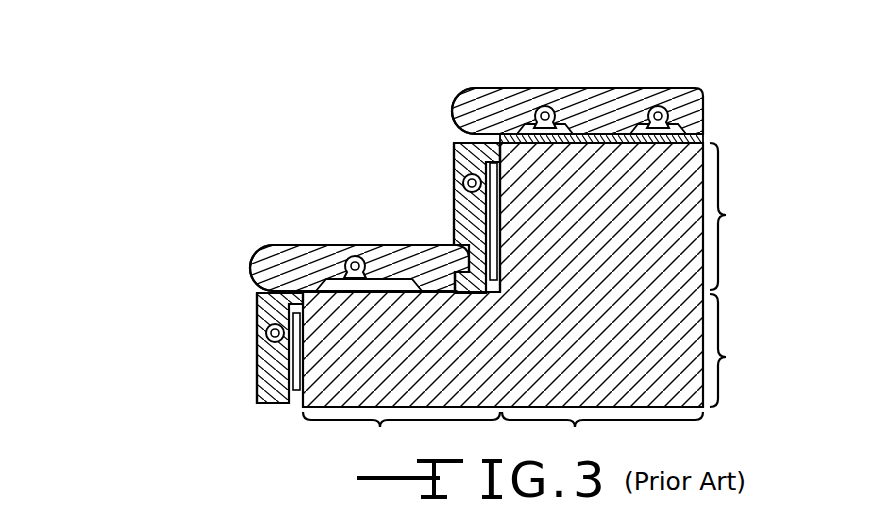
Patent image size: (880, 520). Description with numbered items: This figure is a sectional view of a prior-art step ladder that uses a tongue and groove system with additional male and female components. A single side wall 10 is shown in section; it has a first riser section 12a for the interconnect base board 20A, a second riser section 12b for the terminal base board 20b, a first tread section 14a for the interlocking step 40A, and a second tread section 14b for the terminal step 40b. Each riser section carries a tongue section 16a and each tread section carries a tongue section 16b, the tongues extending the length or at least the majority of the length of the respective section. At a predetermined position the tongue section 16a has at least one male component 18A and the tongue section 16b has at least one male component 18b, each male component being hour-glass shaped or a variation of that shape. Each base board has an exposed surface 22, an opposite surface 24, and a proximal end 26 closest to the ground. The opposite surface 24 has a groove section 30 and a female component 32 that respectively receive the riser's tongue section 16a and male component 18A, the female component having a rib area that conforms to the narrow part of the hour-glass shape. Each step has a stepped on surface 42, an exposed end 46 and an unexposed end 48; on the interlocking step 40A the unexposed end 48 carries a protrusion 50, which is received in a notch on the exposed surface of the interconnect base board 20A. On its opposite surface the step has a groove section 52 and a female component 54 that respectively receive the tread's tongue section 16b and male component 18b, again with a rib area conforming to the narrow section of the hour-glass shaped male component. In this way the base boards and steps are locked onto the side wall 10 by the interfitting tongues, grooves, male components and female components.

The side wall 10 is at (668, 336).
The first riser section 12a is at (726, 215).
The second riser section 12b is at (726, 357).
The first tread section 14a is at (401, 433).
The second tread section 14b is at (602, 433).
The tongue section 16a is at (501, 238).
The tongue section 16b is at (628, 141).
The male component 18A is at (455, 180).
The male component 18b is at (543, 107).
The interconnect base board 20A is at (454, 200).
The terminal base board 20b is at (257, 368).
The exposed surface 22 is at (454, 242).
The opposite surface 24 is at (500, 203).
The proximal end 26 is at (494, 293).
The groove section 30 is at (500, 255).
The female component 32 is at (500, 163).
The interlocking step 40A is at (305, 245).
The terminal step 40b is at (568, 88).
The stepped on surface 42 is at (625, 88).
The exposed end 46 is at (452, 108).
The unexposed end 48 is at (703, 113).
The protrusion 50 is at (348, 253).
The groove section 52 is at (374, 290).
The female component 54 is at (376, 285).